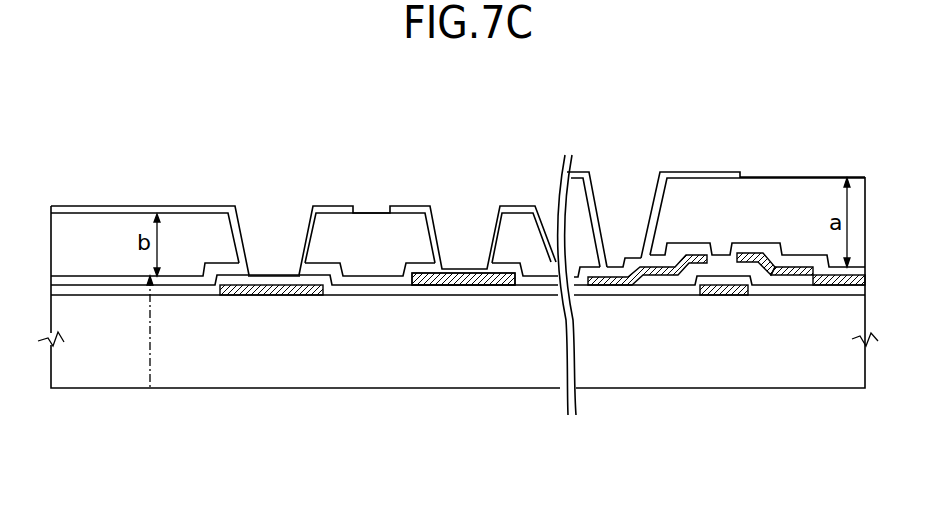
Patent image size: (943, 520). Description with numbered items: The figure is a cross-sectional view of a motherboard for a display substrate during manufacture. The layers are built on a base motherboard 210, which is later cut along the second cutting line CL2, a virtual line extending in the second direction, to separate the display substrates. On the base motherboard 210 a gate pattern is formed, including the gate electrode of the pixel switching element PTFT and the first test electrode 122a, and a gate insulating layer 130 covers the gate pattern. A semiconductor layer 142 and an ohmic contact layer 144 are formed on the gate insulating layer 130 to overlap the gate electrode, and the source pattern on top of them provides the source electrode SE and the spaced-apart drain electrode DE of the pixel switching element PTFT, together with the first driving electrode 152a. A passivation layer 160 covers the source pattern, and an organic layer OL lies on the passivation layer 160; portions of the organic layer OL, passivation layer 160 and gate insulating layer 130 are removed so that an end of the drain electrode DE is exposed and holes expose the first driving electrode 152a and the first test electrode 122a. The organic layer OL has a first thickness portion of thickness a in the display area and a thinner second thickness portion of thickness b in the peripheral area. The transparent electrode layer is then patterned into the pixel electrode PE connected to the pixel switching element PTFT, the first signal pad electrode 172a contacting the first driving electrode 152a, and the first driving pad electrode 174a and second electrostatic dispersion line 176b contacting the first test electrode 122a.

The base motherboard 210 is at (176, 355).
The gate insulating layer 130 is at (343, 290).
The passivation layer 160 is at (392, 283).
The first test electrode 122a is at (275, 293).
The first driving pad electrode 174a is at (257, 296).
The first driving electrode 152a is at (438, 272).
The first signal pad electrode 172a is at (460, 268).
The second electrostatic dispersion line 176b is at (73, 213).
The organic layer OL is at (541, 244).
The pixel electrode PE is at (612, 270).
The drain electrode DE is at (669, 280).
The source electrode SE is at (717, 290).
The ohmic contact layer 144 is at (776, 272).
The semiconductor layer 142 is at (789, 285).
The pixel switching element PTFT is at (770, 455).
The second cutting line CL2 is at (150, 393).